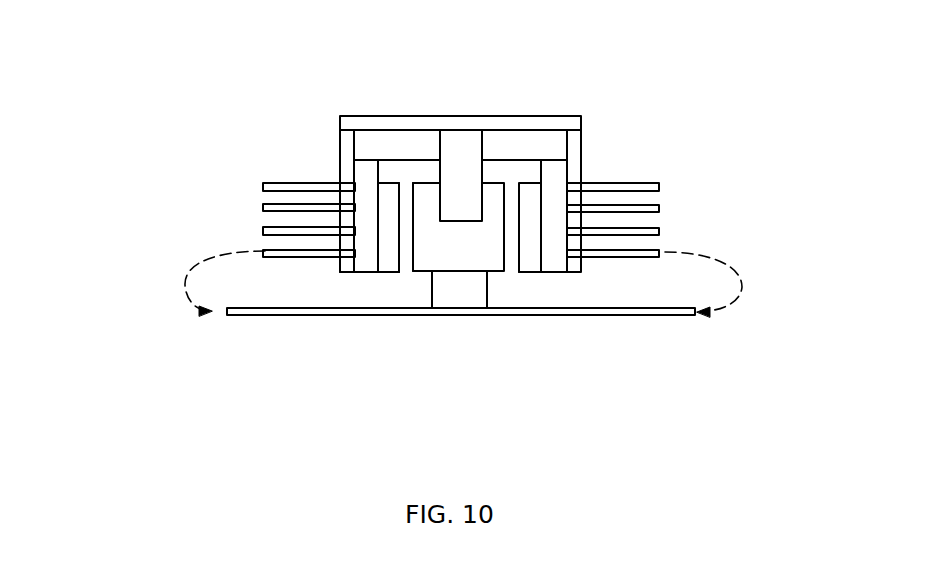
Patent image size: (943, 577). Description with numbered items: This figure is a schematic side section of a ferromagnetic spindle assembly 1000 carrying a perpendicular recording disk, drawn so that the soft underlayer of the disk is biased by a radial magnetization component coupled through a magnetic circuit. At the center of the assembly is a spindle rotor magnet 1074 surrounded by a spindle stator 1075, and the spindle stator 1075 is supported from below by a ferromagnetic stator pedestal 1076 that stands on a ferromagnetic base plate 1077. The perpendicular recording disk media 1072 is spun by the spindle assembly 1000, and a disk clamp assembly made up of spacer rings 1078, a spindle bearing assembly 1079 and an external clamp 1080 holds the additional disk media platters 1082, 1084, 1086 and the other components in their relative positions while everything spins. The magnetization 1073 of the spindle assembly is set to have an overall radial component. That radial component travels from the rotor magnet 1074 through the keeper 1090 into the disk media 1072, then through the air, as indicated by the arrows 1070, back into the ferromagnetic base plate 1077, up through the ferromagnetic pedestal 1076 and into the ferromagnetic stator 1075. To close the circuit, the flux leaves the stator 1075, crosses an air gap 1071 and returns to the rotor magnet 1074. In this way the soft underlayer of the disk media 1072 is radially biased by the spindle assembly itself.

The spindle assembly 1000 is at (110, 21).
The arrows 1070 is at (184, 268).
The air gap 1071 is at (407, 170).
The perpendicular recording disk media 1072 is at (285, 275).
The magnetization 1073 is at (387, 264).
The spindle rotor magnet 1074 is at (406, 270).
The spindle stator 1075 is at (494, 260).
The ferromagnetic stator pedestal 1076 is at (467, 298).
The ferromagnetic base plate 1077 is at (313, 316).
The spacer rings 1078 is at (574, 259).
The spindle bearing assembly 1079 is at (461, 147).
The external clamp 1080 is at (537, 116).
The additional disk media platter 1082 is at (659, 187).
The additional disk media platter 1084 is at (659, 209).
The additional disk media platter 1086 is at (659, 232).
The keeper 1090 is at (363, 173).